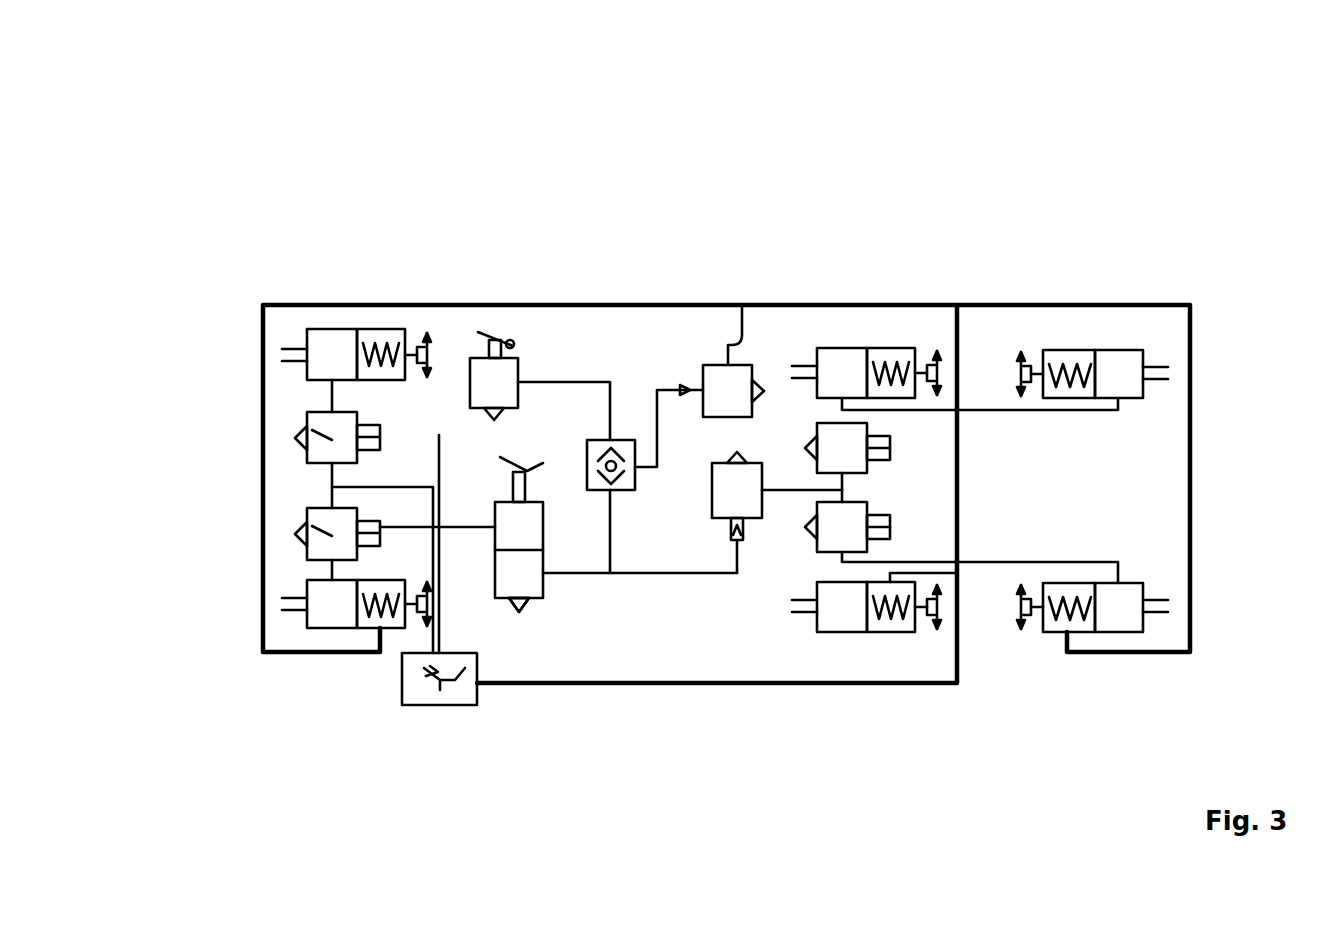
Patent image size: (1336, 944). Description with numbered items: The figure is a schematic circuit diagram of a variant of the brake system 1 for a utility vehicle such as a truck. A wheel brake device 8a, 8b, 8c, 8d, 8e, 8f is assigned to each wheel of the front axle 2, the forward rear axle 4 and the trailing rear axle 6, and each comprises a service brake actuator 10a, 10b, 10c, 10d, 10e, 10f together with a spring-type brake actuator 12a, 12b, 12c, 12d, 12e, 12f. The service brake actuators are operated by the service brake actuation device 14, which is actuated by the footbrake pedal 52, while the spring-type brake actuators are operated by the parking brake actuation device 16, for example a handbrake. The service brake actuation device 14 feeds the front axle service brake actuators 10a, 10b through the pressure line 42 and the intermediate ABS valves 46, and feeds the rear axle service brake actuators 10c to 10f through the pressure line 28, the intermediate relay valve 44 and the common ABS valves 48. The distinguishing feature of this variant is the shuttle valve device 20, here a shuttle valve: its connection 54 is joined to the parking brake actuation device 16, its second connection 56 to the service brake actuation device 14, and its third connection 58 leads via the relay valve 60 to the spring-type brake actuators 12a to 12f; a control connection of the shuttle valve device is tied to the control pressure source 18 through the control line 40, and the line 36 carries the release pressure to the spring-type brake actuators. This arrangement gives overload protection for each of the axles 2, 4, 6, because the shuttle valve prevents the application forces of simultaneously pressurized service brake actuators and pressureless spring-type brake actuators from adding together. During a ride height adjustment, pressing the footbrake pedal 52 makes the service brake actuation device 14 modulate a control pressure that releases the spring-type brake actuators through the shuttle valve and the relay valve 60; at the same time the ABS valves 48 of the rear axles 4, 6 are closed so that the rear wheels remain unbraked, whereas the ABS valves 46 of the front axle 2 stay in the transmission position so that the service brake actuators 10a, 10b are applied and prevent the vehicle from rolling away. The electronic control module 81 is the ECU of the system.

The brake system 1 is at (200, 172).
The front axle 2 is at (322, 695).
The rear axle 4 is at (874, 695).
The rear axle 6 is at (1081, 697).
The wheel brake device 8a is at (303, 282).
The wheel brake device 8b is at (303, 658).
The wheel brake device 8c is at (864, 291).
The wheel brake device 8d is at (875, 664).
The wheel brake device 8e is at (1139, 291).
The wheel brake device 8f is at (1143, 658).
The service brake actuator 10a is at (317, 329).
The service brake actuator 10b is at (320, 628).
The service brake actuator 10c is at (835, 348).
The service brake actuator 10d is at (838, 632).
The service brake actuator 10e is at (1125, 350).
The service brake actuator 10f is at (1125, 620).
The spring-type brake actuator 12a is at (385, 329).
The spring-type brake actuator 12b is at (395, 628).
The spring-type brake actuator 12c is at (902, 348).
The spring-type brake actuator 12d is at (905, 632).
The spring-type brake actuator 12e is at (1056, 350).
The spring-type brake actuator 12f is at (1053, 632).
The service brake actuation device 14 is at (518, 578).
The parking brake actuation device 16 is at (520, 345).
The control pressure source 18 is at (540, 602).
The shuttle valve device 20 is at (583, 337).
The pressure line 28 is at (640, 575).
The line 36 is at (460, 305).
The control line 40 is at (742, 305).
The pressure line 42 is at (439, 440).
The relay valve 44 is at (714, 520).
The ABS valve 46 is at (332, 440).
The ABS valve 48 is at (890, 444).
The footbrake pedal 52 is at (510, 468).
The connection 54 is at (605, 440).
The connection 56 is at (614, 492).
The connection 58 is at (648, 468).
The relay valve 60 is at (712, 365).
The electronic control module (ECU) 81 is at (455, 705).